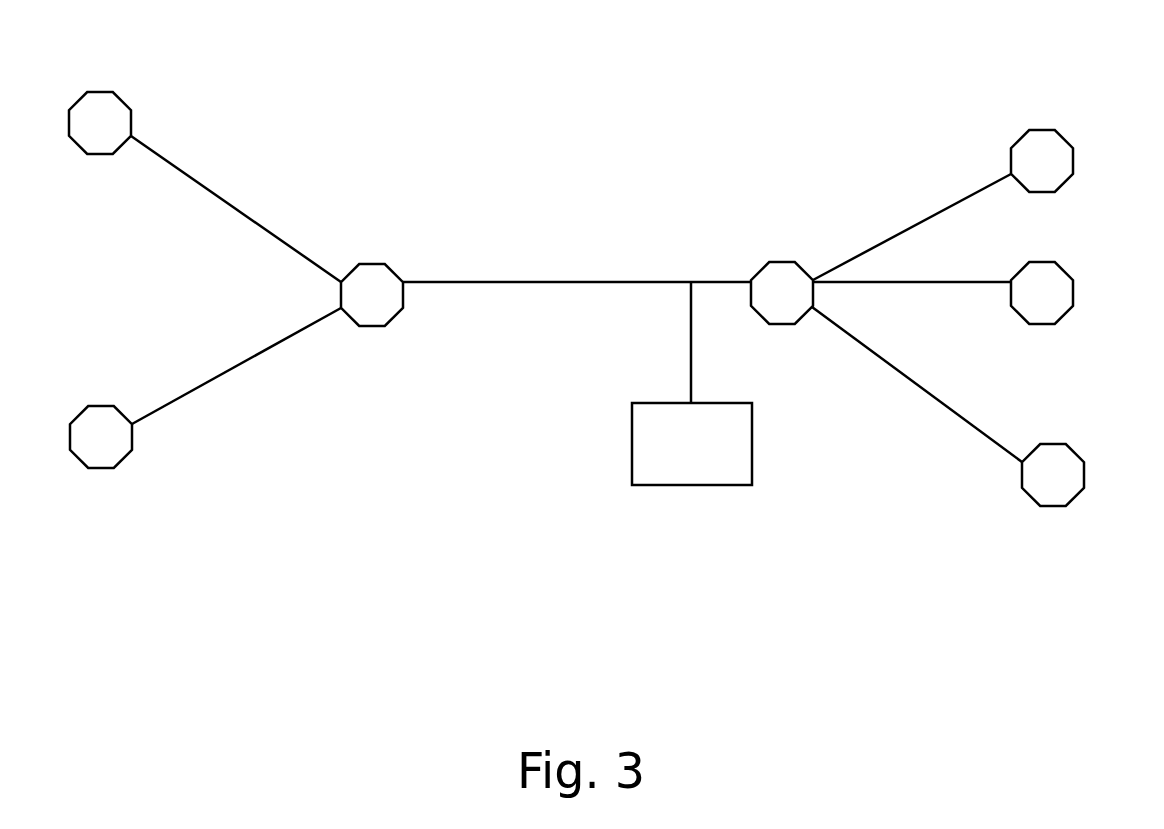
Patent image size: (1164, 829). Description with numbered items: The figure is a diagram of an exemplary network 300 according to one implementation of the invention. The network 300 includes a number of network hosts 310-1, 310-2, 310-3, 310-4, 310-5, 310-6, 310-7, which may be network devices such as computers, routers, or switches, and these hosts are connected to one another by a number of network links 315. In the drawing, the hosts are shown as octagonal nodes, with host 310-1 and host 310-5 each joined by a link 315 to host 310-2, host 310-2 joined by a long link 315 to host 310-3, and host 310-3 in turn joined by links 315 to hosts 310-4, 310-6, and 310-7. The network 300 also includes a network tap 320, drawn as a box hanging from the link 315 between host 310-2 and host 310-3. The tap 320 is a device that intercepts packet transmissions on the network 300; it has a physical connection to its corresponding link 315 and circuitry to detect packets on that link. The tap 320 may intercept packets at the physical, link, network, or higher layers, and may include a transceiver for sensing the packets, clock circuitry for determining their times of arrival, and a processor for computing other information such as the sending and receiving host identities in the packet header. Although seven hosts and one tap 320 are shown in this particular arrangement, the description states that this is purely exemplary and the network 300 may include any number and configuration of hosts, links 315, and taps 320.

The network 300 is at (893, 590).
The network host 310-1 is at (125, 100).
The network host 310-2 is at (362, 268).
The network host 310-3 is at (787, 270).
The network host 310-4 is at (1067, 142).
The network host 310-5 is at (107, 407).
The network host 310-6 is at (1068, 282).
The network host 310-7 is at (1068, 468).
The network link 315 is at (227, 202).
The network tap 320 is at (747, 445).